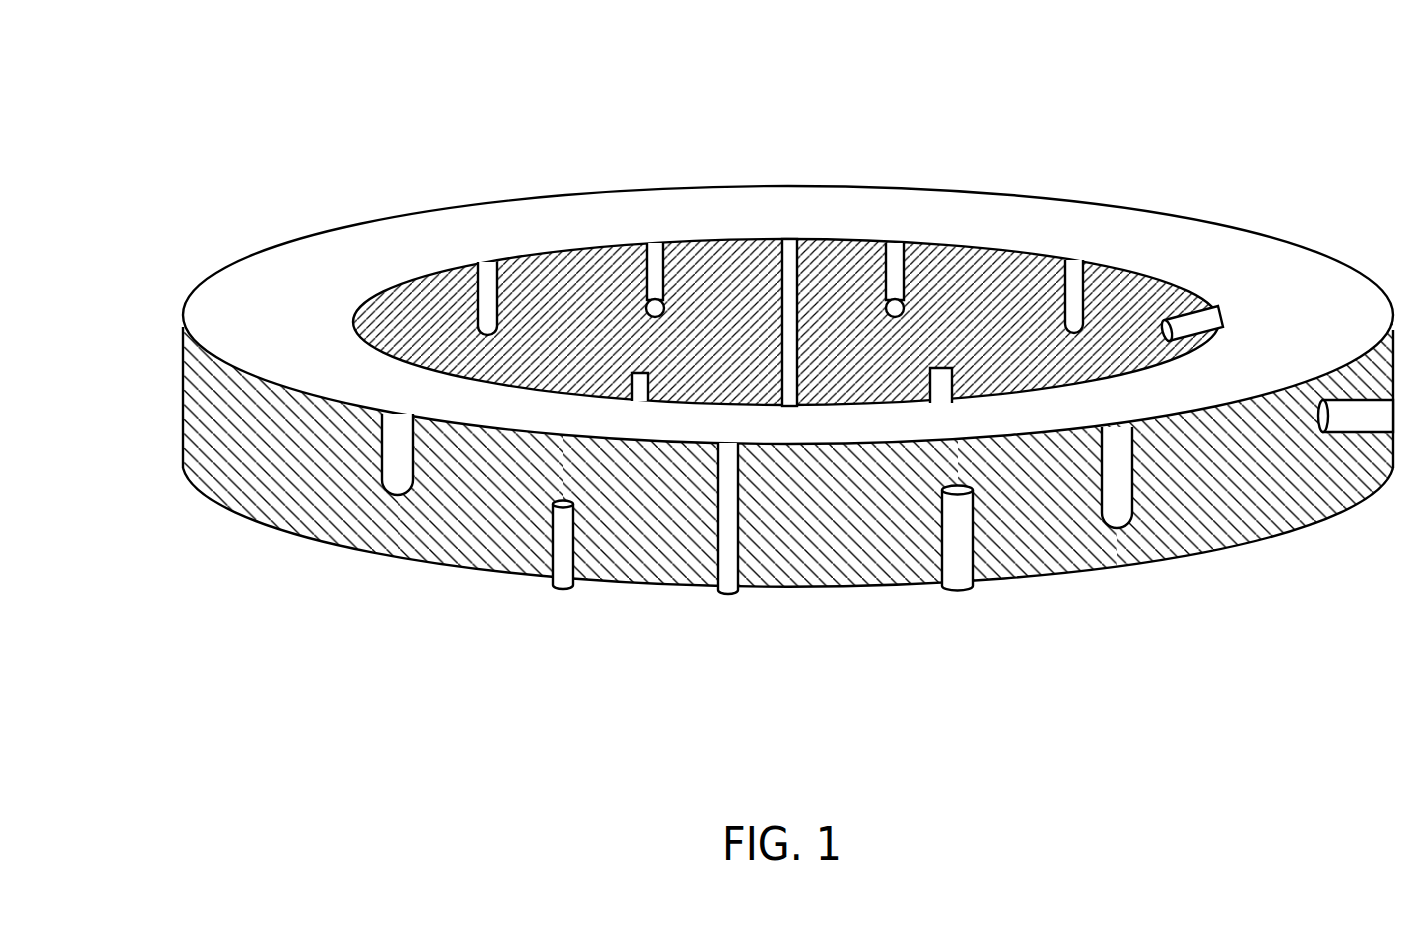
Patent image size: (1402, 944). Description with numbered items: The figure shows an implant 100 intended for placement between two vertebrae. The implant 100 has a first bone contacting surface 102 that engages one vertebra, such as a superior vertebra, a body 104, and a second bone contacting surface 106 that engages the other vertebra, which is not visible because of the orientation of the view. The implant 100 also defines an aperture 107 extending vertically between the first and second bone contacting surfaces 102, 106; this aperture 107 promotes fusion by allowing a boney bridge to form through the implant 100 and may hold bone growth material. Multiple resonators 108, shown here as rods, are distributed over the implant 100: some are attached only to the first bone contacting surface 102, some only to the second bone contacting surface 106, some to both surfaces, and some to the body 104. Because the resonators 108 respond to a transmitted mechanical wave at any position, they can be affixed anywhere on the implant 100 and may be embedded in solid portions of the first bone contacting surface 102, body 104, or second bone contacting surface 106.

The implant 100 is at (272, 80).
The first bone contacting surface 102 is at (328, 246).
The body 104 is at (183, 405).
The second bone contacting surface 106 is at (281, 537).
The aperture 107 is at (760, 248).
The resonators 108 is at (482, 290).